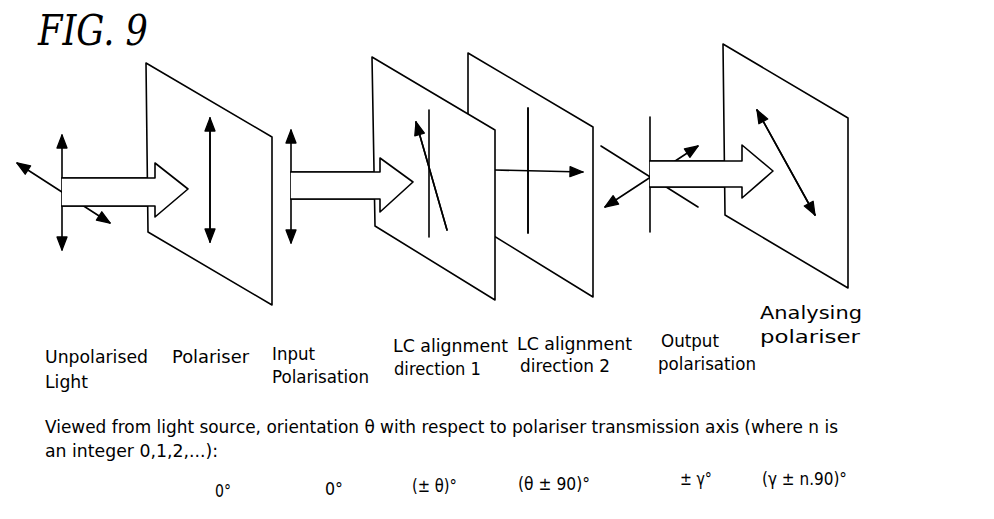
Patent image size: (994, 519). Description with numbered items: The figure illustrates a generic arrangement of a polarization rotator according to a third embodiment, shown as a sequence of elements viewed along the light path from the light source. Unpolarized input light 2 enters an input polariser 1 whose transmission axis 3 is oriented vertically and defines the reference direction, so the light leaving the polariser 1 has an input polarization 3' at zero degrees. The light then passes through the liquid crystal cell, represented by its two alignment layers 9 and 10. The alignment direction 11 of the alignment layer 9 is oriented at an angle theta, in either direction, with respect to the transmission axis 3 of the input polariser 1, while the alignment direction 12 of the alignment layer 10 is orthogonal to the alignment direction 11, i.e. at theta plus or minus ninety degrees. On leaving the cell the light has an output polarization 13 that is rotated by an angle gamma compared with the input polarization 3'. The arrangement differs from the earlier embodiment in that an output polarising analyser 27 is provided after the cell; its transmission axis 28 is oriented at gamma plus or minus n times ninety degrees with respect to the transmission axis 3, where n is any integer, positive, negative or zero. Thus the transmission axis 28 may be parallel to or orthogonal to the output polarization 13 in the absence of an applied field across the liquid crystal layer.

The input polariser 1 is at (208, 265).
The unpolarized input light 2 is at (110, 190).
The transmission axis 3 is at (226, 135).
The input polarization 3' is at (349, 154).
The alignment layer 9 is at (397, 68).
The alignment layer 10 is at (508, 70).
The alignment direction 11 is at (447, 212).
The alignment direction 12 is at (560, 175).
The output polarization 13 is at (690, 150).
The output polarising analyser 27 is at (812, 263).
The transmission axis 28 is at (772, 127).